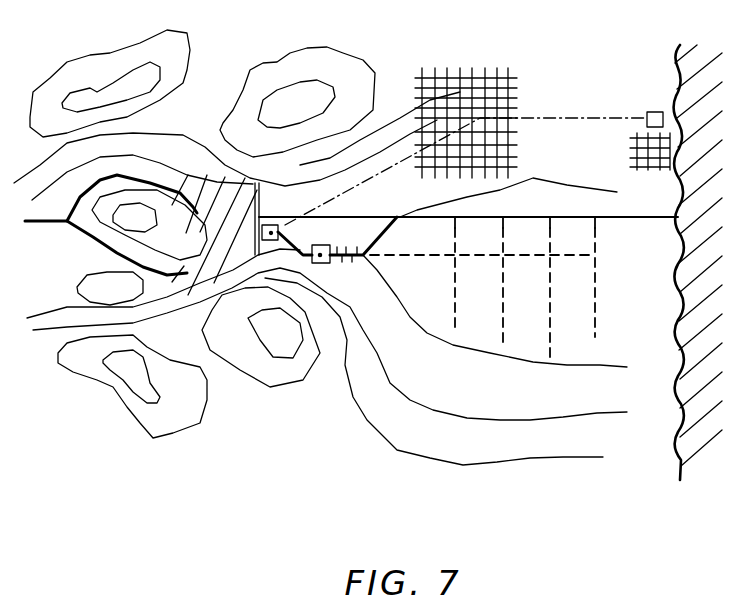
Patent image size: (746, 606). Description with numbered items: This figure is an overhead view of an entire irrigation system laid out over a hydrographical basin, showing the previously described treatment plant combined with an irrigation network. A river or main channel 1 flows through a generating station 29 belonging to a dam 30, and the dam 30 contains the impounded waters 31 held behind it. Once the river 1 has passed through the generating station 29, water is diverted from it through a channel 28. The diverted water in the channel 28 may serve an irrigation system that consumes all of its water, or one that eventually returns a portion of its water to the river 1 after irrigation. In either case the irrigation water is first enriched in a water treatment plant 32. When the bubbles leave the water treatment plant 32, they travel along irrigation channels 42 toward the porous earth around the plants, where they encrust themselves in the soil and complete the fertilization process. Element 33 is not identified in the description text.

The river or main channel 1 is at (364, 217).
The channel 28 is at (302, 257).
The generating station 29 is at (271, 232).
The dam 30 is at (230, 205).
The impounded waters 31 is at (48, 221).
The water treatment plant 32 is at (320, 257).
The contour line 33 is at (520, 320).
The irrigation channels 42 is at (592, 325).